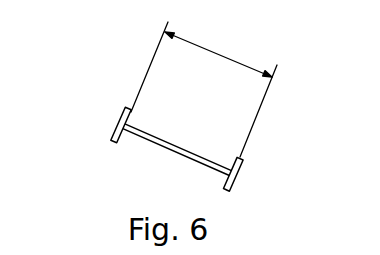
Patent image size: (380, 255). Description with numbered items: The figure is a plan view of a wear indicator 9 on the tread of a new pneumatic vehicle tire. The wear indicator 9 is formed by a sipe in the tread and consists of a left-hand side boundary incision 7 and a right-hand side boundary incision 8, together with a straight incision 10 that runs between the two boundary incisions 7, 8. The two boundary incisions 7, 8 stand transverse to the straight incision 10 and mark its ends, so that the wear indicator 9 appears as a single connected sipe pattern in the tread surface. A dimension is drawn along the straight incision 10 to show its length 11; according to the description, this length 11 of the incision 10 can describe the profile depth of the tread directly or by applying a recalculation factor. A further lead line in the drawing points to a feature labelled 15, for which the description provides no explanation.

The left-hand side boundary incision 7 is at (117, 128).
The right-hand side boundary incision 8 is at (236, 178).
The wear indicator 9 is at (202, 133).
The straight incision 10 is at (172, 150).
The length of the incision 11 is at (201, 67).
The end face 15 is at (265, 125).